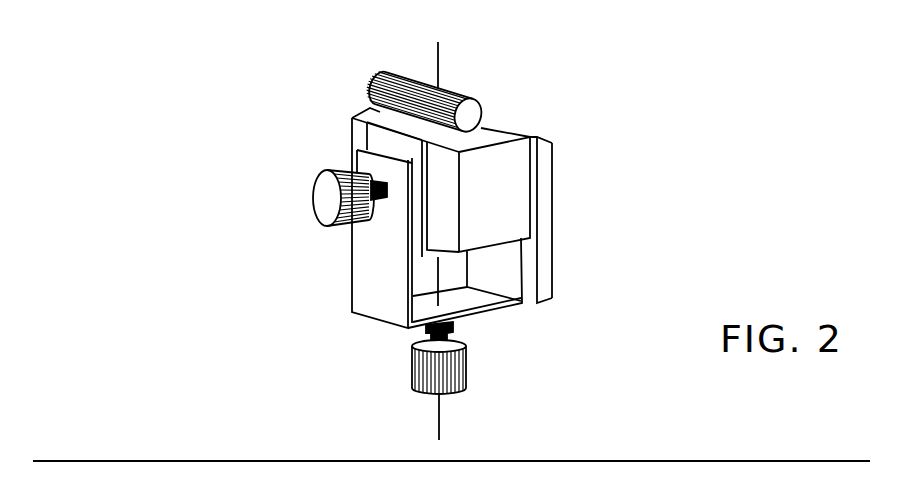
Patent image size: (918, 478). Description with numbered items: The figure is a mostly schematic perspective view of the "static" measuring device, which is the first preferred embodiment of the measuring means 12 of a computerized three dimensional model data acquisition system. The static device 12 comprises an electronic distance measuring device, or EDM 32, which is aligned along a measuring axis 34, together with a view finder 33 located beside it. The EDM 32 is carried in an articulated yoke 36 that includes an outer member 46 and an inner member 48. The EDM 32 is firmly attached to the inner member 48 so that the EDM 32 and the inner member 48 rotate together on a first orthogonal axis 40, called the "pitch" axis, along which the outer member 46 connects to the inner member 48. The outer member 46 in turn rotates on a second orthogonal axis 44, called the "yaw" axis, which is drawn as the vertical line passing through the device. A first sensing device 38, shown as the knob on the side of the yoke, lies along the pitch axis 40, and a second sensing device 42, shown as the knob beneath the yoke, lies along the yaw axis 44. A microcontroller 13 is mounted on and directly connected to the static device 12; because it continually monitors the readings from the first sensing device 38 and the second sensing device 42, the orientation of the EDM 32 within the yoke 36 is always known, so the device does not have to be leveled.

The measuring means 12 is at (147, 257).
The microcontroller 13 is at (548, 268).
The electronic distance measuring device 32 is at (373, 117).
The view finder 33 is at (456, 87).
The measuring axis 34 is at (493, 197).
The articulated yoke 36 is at (338, 315).
The first sensing device 38 is at (330, 200).
The first orthogonal axis 40 is at (553, 161).
The second sensing device 42 is at (465, 378).
The second orthogonal axis 44 is at (437, 415).
The outer member 46 is at (373, 277).
The inner member 48 is at (382, 147).